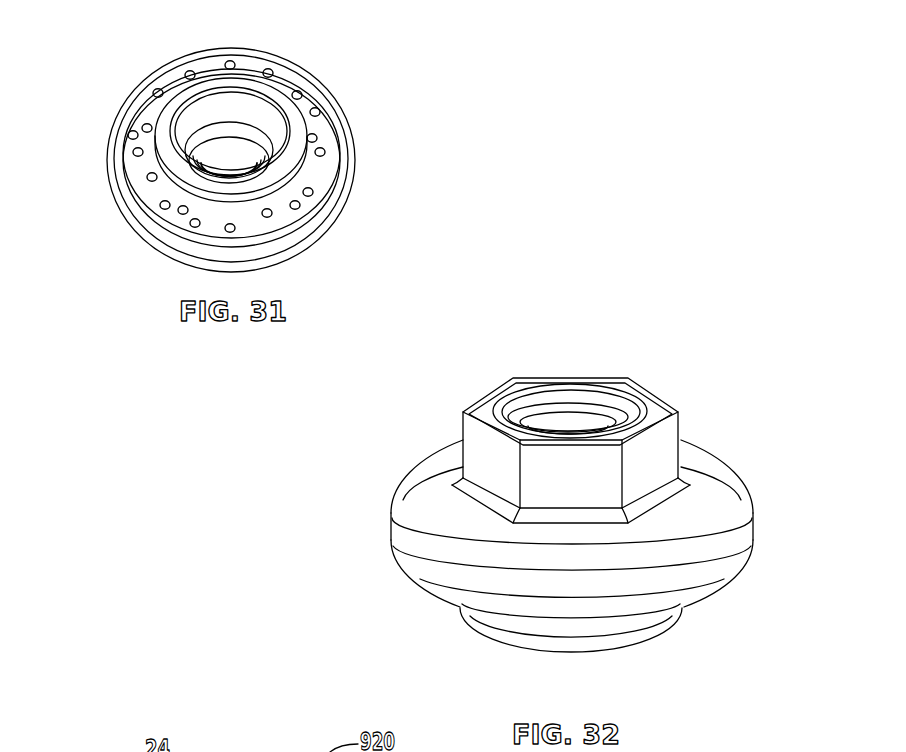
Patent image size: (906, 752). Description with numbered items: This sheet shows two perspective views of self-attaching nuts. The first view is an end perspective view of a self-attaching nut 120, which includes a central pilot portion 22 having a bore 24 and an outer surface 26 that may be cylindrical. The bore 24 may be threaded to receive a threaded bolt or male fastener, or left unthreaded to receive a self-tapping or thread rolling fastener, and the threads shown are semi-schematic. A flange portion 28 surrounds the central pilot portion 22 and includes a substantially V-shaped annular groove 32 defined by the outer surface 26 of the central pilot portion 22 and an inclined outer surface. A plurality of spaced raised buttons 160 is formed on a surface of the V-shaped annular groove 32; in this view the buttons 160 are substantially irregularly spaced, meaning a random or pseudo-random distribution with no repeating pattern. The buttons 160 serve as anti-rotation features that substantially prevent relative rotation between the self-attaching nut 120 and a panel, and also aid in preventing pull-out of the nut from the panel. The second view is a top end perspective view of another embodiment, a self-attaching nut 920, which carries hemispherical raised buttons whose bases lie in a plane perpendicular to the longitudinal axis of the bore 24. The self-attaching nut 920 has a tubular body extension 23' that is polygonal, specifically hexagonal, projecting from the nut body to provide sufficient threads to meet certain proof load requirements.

In FIG. 31, the self-attaching nut 120 is at (307, 59).
In FIG. 31, the central pilot portion 22 is at (153, 112).
In FIG. 31, the bore 24 is at (193, 102).
In FIG. 31, the outer surface 26 is at (308, 132).
In FIG. 32, the outer surface 26 is at (650, 617).
In FIG. 31, the V-shaped annular groove 32 is at (312, 169).
In FIG. 31, the spaced raised buttons 160 is at (133, 150).
In FIG. 32, the self-attaching nut 920 is at (543, 484).
In FIG. 32, the tubular body extension 23' is at (633, 450).
In FIG. 32, the flange portion 28 is at (382, 522).